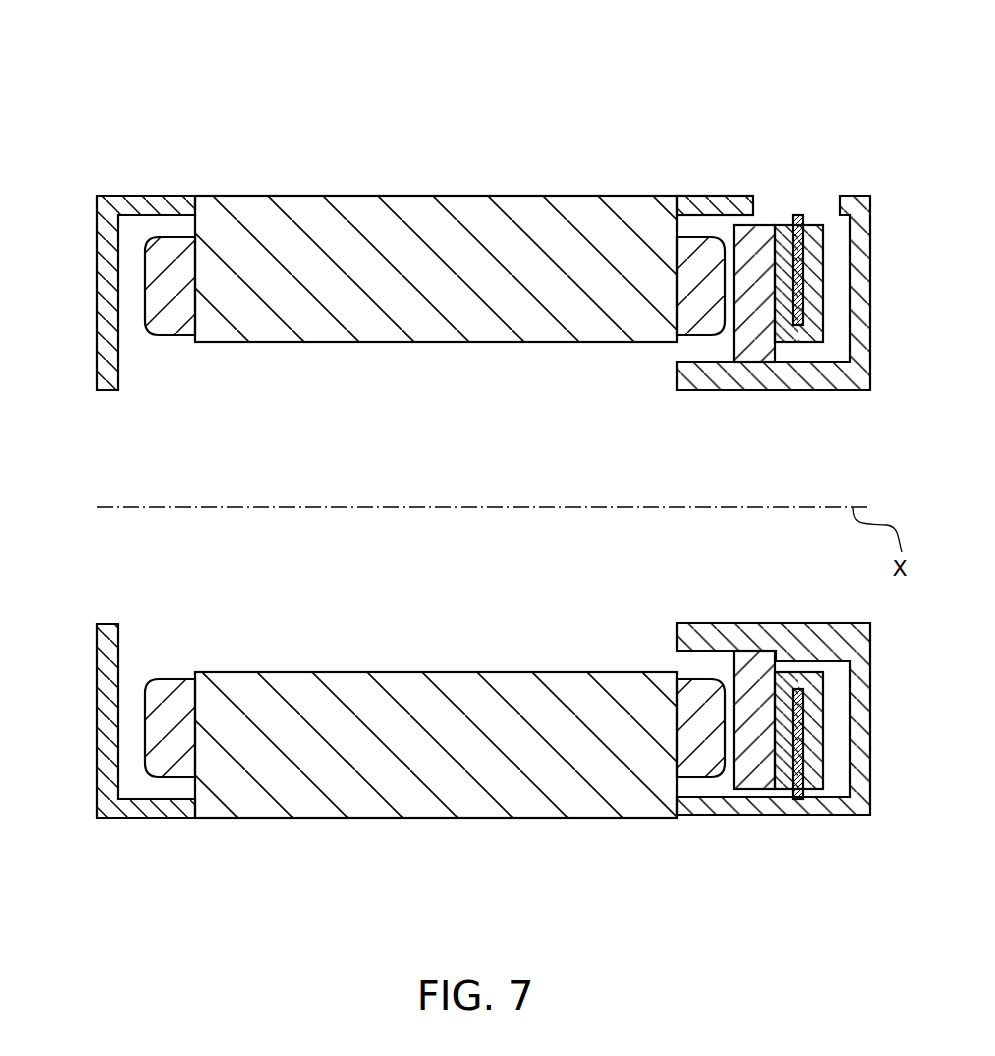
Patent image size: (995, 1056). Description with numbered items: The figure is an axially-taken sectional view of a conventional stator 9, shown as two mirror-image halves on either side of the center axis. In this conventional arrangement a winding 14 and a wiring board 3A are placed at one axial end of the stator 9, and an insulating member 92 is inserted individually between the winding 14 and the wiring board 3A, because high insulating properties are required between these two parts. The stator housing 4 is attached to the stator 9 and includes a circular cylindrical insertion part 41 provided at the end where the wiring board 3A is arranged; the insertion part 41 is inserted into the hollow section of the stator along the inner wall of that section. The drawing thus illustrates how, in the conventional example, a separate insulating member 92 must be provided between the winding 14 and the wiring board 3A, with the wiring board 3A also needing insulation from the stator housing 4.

The conventional stator 9 is at (581, 128).
The insulating member 92 is at (762, 272).
The winding 14 is at (696, 262).
The wiring board 3A is at (815, 232).
The stator housing 4 is at (814, 400).
The insertion part 41 is at (749, 385).